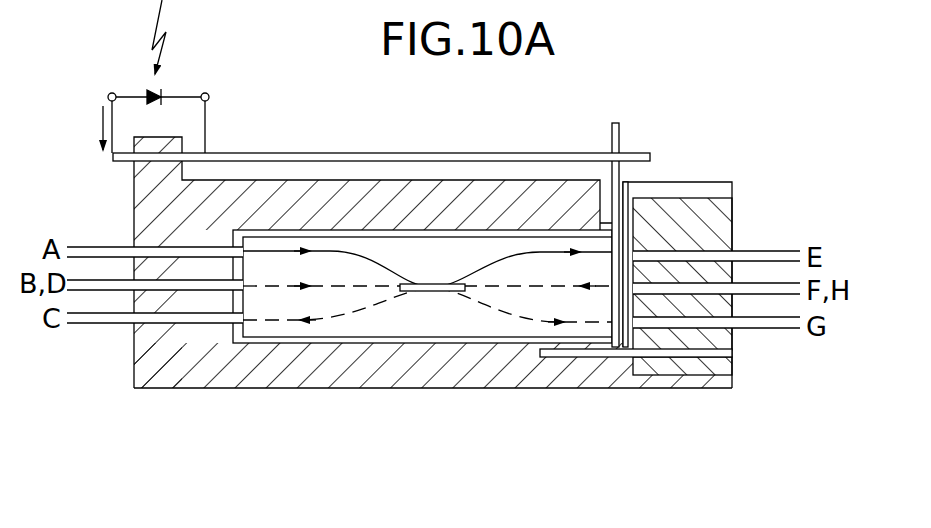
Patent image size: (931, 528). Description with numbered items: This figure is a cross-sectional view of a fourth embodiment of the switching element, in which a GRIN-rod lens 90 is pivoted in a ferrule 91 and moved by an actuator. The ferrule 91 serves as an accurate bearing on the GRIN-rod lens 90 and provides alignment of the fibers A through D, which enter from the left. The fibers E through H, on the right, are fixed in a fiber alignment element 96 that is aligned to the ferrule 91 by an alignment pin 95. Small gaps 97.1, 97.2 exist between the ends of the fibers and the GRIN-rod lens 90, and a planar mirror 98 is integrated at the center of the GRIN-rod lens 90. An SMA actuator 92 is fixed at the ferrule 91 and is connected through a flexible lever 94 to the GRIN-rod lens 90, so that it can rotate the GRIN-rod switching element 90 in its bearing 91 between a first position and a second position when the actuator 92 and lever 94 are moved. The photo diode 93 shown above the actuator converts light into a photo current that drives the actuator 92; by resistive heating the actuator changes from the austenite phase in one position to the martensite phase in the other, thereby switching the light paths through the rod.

The GRIN-rod lens 90 is at (450, 322).
The ferrule 91 is at (134, 381).
The SMA actuator 92 is at (375, 153).
The photo diode 93 is at (148, 92).
The flexible lever 94 is at (617, 142).
The alignment pin 95 is at (658, 355).
The fiber alignment element 96 is at (726, 236).
The small gap 97.1 is at (236, 336).
The small gap 97.2 is at (627, 240).
The planar mirror 98 is at (440, 293).